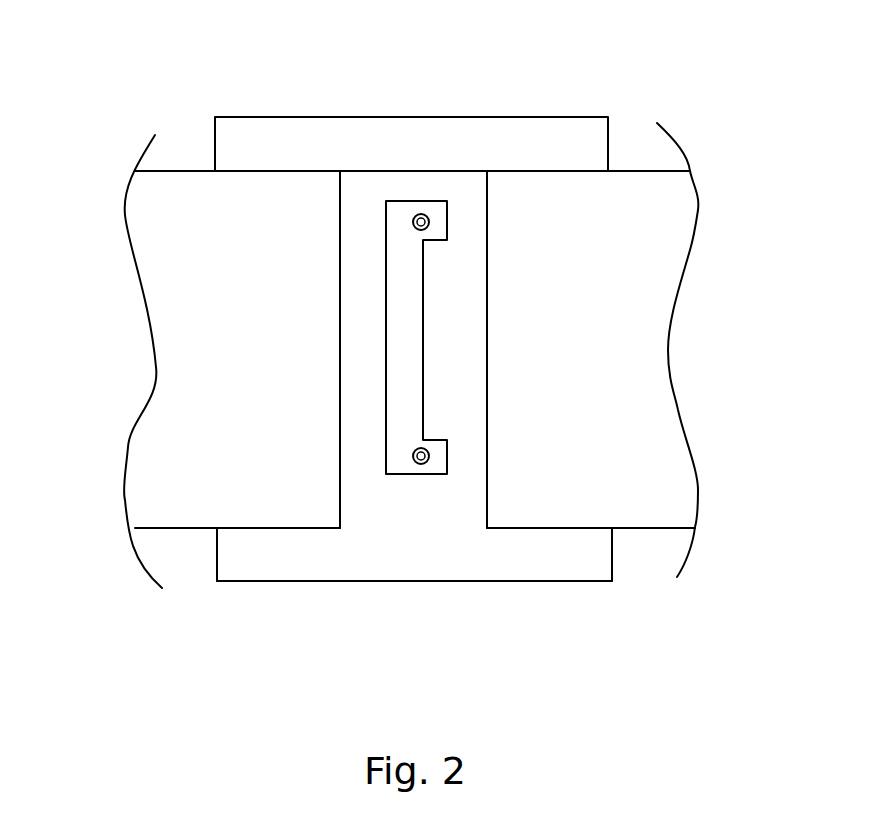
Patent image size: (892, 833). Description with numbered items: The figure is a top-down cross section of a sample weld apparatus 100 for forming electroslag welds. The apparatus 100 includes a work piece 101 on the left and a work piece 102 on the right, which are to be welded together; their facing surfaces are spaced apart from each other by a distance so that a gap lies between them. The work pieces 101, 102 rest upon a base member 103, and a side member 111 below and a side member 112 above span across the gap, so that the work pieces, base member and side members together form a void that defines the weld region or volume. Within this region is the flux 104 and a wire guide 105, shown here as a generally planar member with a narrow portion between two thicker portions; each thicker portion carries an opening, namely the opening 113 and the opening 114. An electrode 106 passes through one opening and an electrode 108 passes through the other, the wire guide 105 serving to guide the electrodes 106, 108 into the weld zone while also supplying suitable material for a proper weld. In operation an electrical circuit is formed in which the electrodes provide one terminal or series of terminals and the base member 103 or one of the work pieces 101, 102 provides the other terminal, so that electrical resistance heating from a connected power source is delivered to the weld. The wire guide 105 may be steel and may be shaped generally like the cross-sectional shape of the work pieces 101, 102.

The weld apparatus 100 is at (129, 39).
The work piece 101 is at (183, 512).
The work piece 102 is at (635, 462).
The base member 103 is at (592, 623).
The flux 104 is at (383, 495).
The wire guide 105 is at (403, 201).
The electrode 106 is at (421, 464).
The electrode 108 is at (423, 214).
The side member 111 is at (553, 563).
The side member 112 is at (570, 130).
The opening 113 is at (428, 460).
The opening 114 is at (413, 223).